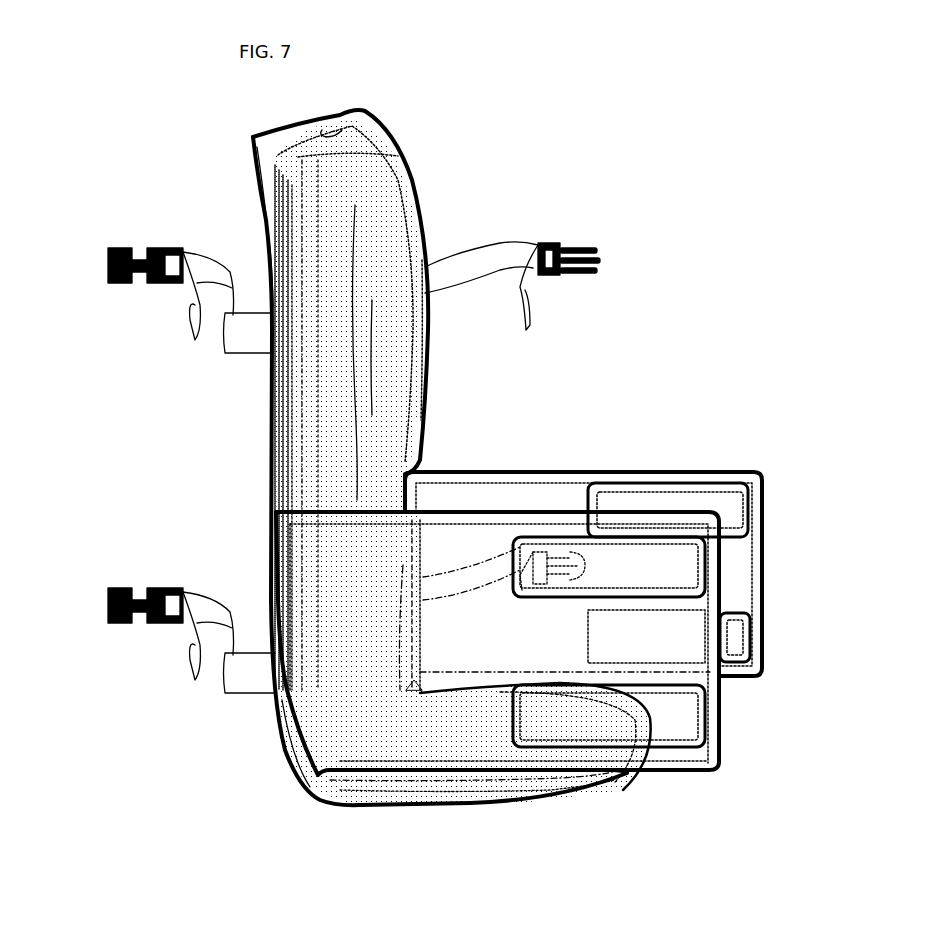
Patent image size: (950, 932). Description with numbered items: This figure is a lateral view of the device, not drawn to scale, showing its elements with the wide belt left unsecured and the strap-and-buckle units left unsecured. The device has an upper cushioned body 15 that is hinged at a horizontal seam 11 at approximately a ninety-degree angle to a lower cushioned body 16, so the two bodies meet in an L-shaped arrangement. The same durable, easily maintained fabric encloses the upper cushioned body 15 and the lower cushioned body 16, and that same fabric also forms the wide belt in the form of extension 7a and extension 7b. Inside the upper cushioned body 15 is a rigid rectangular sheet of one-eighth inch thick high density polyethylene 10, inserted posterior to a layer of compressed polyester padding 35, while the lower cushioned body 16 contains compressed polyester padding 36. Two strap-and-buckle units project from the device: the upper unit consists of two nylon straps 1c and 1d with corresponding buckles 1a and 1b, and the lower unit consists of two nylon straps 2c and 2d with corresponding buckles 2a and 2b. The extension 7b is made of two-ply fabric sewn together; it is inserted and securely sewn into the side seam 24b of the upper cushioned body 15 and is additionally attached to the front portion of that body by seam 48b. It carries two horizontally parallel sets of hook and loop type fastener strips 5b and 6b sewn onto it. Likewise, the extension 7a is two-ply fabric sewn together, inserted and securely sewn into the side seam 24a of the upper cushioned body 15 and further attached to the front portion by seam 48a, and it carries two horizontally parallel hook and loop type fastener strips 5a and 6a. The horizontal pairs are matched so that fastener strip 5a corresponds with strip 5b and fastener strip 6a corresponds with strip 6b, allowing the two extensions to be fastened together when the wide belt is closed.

The high density polyethylene sheet 10 is at (265, 498).
The horizontal seam 11 is at (318, 738).
The upper cushioned body 15 is at (418, 181).
The lower cushioned body 16 is at (315, 806).
The compressed polyester padding 35 is at (387, 215).
The compressed polyester padding 36 is at (477, 735).
The buckle 1a is at (600, 252).
The buckle 1b is at (108, 260).
The nylon strap 1c is at (520, 285).
The nylon strap 1d is at (223, 337).
The buckle 2a is at (546, 575).
The buckle 2b is at (108, 600).
The nylon strap 2c is at (475, 572).
The nylon strap 2d is at (220, 657).
The side seam 24a is at (425, 342).
The side seam 24b is at (280, 418).
The seam 48a is at (403, 565).
The seam 48b is at (290, 760).
The hook and loop type fastener strip 5a is at (742, 522).
The hook and loop type fastener strip 5b is at (673, 567).
The hook and loop type fastener strip 6a is at (735, 638).
The hook and loop type fastener strip 6b is at (680, 723).
The extension 7a is at (742, 468).
The extension 7b is at (663, 778).